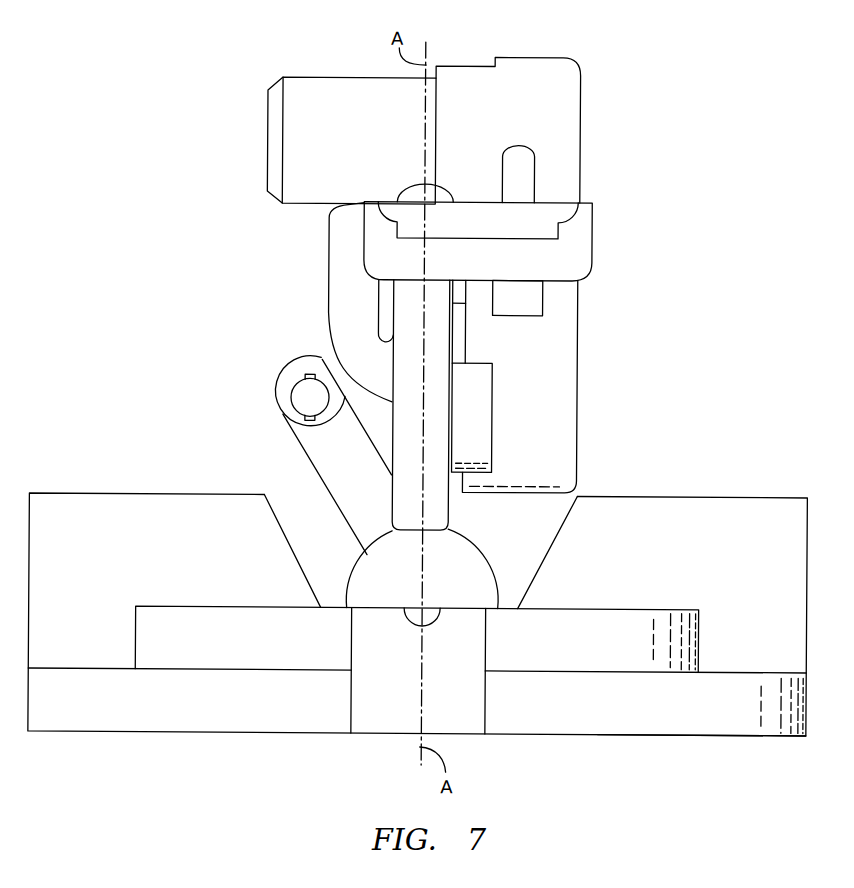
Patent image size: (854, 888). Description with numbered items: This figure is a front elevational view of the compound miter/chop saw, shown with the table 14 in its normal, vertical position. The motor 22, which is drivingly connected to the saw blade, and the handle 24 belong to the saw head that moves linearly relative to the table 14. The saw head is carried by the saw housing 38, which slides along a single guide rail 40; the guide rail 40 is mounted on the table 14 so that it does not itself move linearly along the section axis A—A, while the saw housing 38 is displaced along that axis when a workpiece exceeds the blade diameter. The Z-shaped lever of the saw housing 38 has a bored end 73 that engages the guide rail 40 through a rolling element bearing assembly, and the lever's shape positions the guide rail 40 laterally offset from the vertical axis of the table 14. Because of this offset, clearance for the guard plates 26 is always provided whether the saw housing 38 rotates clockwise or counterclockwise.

The table 14 is at (777, 723).
The motor 22 is at (298, 165).
The handle 24 is at (573, 262).
The guard 26 is at (793, 510).
The saw housing 38 is at (305, 378).
The guide rail 40 is at (302, 402).
The end 73 is at (283, 382).